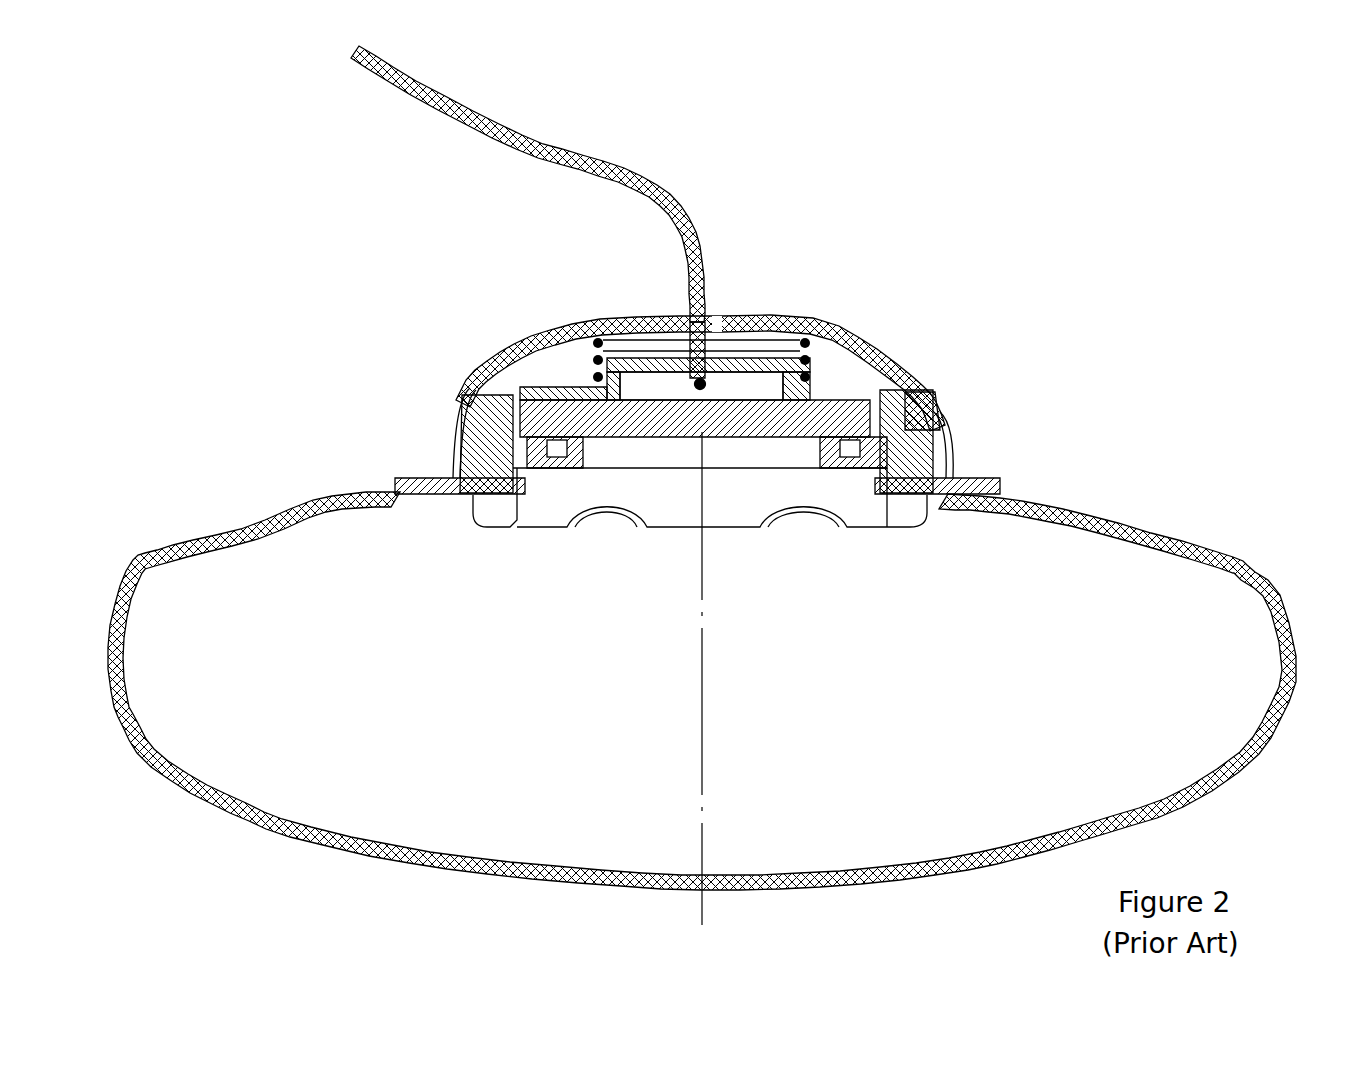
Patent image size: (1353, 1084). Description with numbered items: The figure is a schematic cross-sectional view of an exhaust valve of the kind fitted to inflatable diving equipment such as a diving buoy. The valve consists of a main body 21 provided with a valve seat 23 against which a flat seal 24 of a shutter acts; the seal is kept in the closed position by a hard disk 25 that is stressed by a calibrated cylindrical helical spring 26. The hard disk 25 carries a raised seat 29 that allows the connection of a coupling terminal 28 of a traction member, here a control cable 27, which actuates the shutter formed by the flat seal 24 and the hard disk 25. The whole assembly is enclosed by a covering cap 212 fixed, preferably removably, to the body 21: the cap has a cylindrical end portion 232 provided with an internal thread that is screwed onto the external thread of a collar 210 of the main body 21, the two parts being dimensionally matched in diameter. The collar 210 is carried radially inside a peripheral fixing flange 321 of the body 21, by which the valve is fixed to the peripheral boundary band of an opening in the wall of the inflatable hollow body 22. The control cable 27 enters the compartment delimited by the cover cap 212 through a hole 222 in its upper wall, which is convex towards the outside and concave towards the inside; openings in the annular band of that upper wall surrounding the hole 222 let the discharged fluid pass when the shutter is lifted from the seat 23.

The main body 21 is at (470, 410).
The collar 210 is at (897, 430).
The covering cap 212 is at (490, 377).
The inflatable hollow body 22 is at (247, 534).
The hole 222 is at (717, 326).
The valve seat 23 is at (825, 430).
The cylindrical end portion 232 is at (925, 413).
The flat seal 24 is at (680, 422).
The hard disk 25 is at (590, 390).
The calibrated cylindrical helical spring 26 is at (810, 365).
The control cable 27 is at (548, 150).
The coupling terminal 28 is at (700, 392).
The raised seat 29 is at (750, 390).
The peripheral fixing flange 321 is at (420, 480).